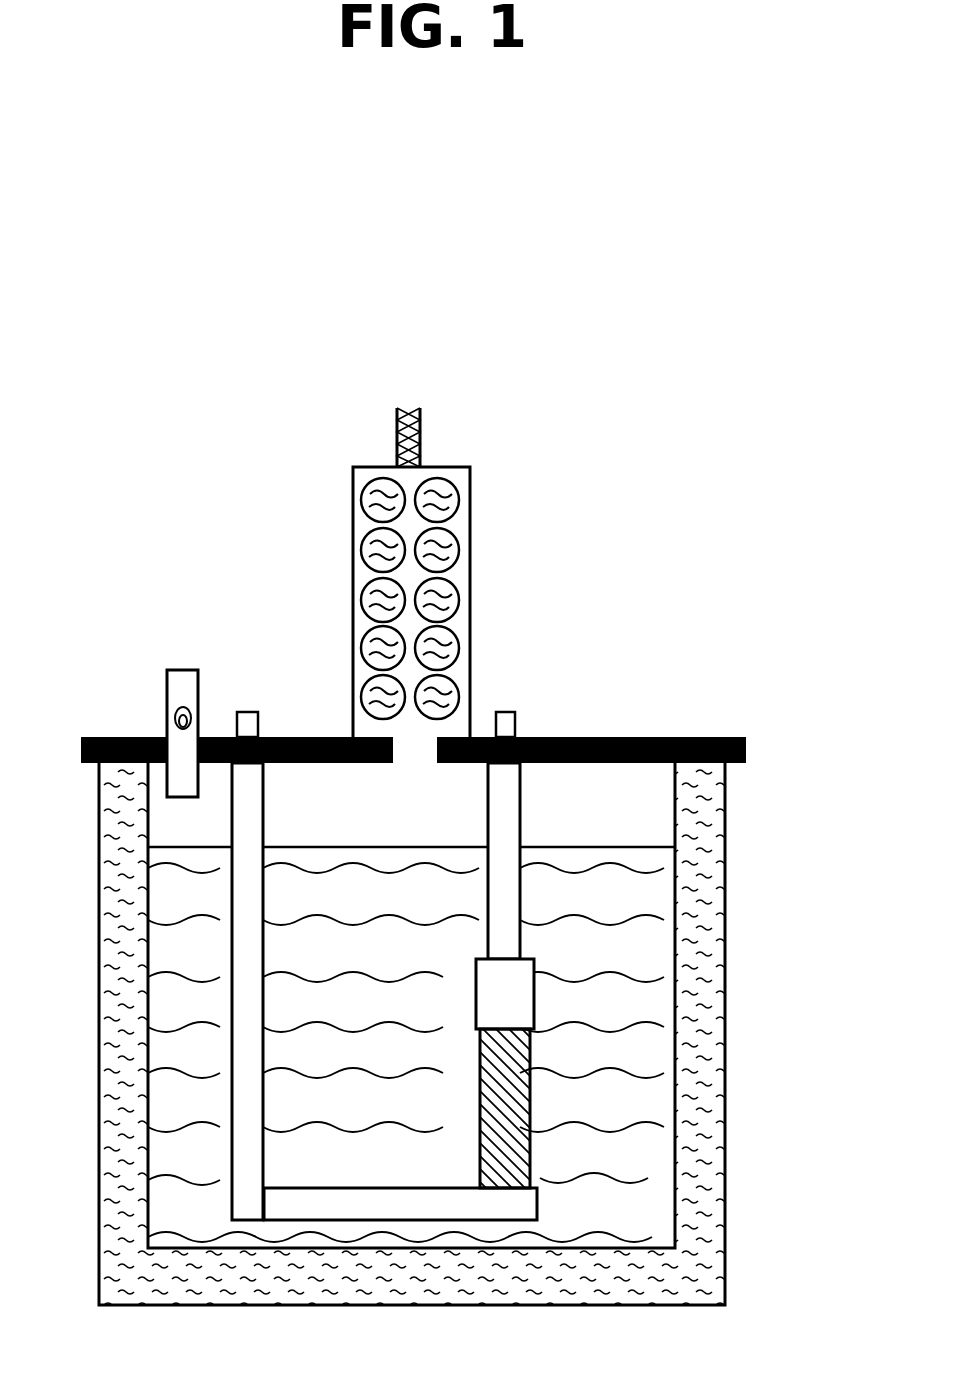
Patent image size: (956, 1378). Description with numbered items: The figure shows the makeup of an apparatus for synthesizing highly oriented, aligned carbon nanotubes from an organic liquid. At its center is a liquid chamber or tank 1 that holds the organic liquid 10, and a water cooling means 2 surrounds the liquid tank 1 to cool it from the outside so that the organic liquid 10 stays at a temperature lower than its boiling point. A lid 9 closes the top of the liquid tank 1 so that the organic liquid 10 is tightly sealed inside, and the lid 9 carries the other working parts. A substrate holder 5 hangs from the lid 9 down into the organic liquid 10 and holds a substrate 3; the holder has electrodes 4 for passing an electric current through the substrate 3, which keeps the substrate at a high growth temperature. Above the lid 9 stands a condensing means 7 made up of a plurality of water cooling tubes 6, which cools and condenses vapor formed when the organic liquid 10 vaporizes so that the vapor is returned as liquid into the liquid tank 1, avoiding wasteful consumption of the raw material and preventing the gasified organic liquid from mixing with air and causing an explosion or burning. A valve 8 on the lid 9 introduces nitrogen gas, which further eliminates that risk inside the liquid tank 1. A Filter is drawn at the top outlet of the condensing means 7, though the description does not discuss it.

The liquid tank 1 is at (675, 800).
The water cooling means 2 is at (725, 1223).
The substrate 3 is at (530, 1107).
The electrodes 4 is at (258, 728).
The substrate holder 5 is at (432, 1203).
The water cooling tubes 6 is at (445, 549).
The condensing means 7 is at (470, 523).
The valve 8 is at (188, 670).
The lid 9 is at (120, 737).
The organic liquid 10 is at (640, 878).
The filter Filter is at (423, 447).